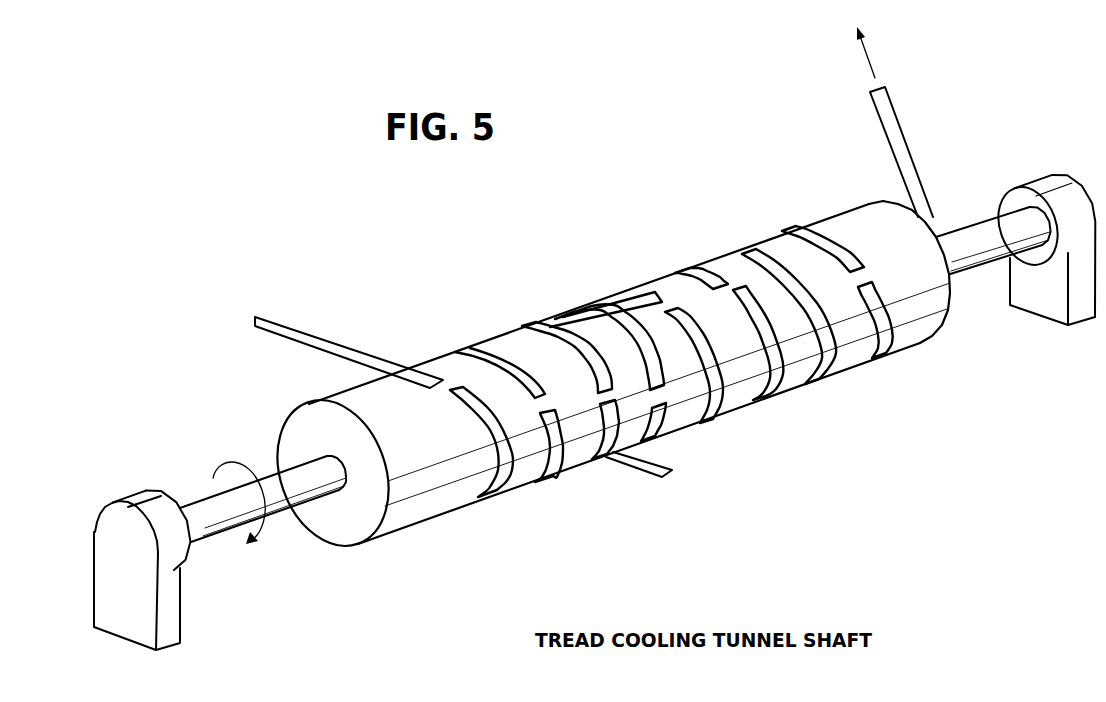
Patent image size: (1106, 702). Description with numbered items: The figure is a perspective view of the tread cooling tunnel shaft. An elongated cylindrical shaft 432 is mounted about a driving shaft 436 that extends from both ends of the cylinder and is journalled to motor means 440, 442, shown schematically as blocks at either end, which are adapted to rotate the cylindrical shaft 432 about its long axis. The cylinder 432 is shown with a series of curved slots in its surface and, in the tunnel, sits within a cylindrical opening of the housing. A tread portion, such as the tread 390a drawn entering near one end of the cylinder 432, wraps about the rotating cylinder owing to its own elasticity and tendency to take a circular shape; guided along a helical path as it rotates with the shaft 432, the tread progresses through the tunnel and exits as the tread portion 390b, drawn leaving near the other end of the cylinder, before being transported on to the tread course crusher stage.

The cylindrical shaft 432 is at (437, 522).
The driving shaft 436 is at (197, 504).
The motor means 440 is at (1097, 318).
The motor means 442 is at (185, 628).
The tread 390a is at (310, 334).
The tread portion 390b is at (892, 114).